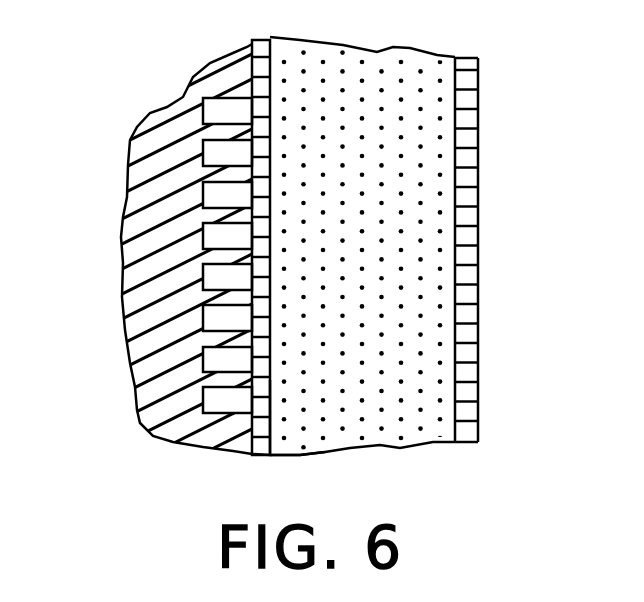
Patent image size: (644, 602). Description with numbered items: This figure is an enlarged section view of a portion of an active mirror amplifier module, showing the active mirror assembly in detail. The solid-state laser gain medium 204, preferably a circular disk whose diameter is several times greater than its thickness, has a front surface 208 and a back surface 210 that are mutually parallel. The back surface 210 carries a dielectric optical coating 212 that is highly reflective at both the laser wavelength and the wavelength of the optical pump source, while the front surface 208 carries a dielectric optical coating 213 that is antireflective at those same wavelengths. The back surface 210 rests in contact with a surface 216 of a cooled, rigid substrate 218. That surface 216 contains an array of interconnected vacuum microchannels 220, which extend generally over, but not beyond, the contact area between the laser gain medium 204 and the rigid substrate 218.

The solid-state laser gain medium 204 is at (432, 298).
The front surface 208 is at (478, 78).
The back surface 210 is at (250, 77).
The dielectric optical coating 212 is at (270, 418).
The dielectric optical coating 213 is at (478, 242).
The surface 216 is at (288, 445).
The rigid substrate 218 is at (147, 276).
The vacuum microchannels 220 is at (200, 193).